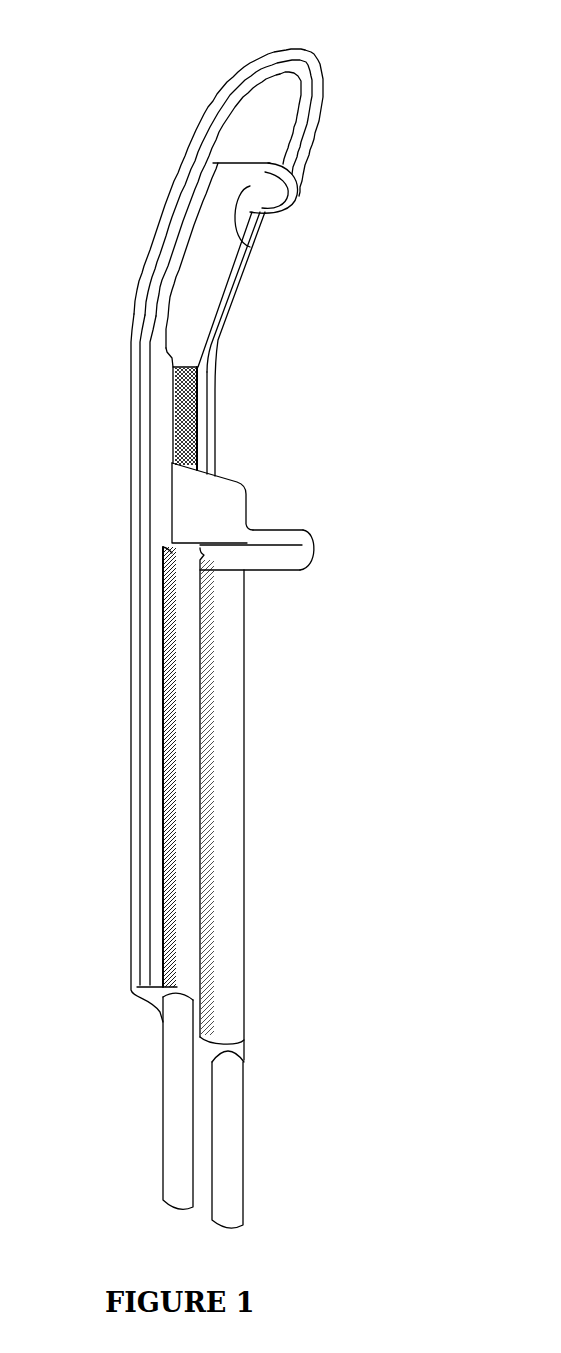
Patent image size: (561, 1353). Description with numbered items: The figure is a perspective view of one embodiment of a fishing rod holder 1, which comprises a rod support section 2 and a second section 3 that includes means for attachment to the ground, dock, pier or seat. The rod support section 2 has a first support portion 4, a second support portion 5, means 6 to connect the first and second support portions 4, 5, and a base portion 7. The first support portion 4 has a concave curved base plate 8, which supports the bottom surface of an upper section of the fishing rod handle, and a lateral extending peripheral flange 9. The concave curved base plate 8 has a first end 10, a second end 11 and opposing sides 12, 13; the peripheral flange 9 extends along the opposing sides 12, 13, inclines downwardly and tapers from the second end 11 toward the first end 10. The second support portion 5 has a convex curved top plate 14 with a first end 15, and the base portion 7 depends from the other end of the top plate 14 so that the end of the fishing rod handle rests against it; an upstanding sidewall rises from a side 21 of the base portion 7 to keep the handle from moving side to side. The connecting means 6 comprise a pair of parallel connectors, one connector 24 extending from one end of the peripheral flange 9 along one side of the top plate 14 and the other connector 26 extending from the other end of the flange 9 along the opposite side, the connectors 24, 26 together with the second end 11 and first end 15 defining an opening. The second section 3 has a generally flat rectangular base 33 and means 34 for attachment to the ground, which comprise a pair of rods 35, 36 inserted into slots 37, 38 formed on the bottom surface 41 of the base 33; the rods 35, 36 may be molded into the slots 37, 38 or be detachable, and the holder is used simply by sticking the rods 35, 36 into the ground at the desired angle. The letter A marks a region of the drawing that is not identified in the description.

The fishing rod holder 1 is at (322, 390).
The rod support section 2 is at (260, 294).
The second section 3 is at (266, 793).
The first support portion 4 is at (326, 127).
The second support portion 5 is at (234, 428).
The means to connect said first and second support portions 6 is at (134, 241).
The base portion 7 is at (314, 549).
The concave curved base plate 8 is at (293, 175).
The lateral extending peripheral flange 9 is at (258, 86).
The first end 10 is at (302, 83).
The second end 11 is at (293, 201).
The opposing side 12 is at (233, 118).
The opposing side 13 is at (250, 237).
The convex curved top plate 14 is at (185, 400).
The first end 15 is at (186, 362).
The side 21 is at (240, 537).
The connector 24 is at (246, 268).
The connector 26 is at (185, 195).
The generally flat rectangular base 33 is at (145, 810).
The means for attachment 34 is at (277, 1107).
The rod 35 is at (173, 1107).
The rod 36 is at (228, 1158).
The slot 37 is at (177, 975).
The slot 38 is at (240, 997).
The bottom surface 41 is at (157, 870).
The trigger block A is at (222, 500).